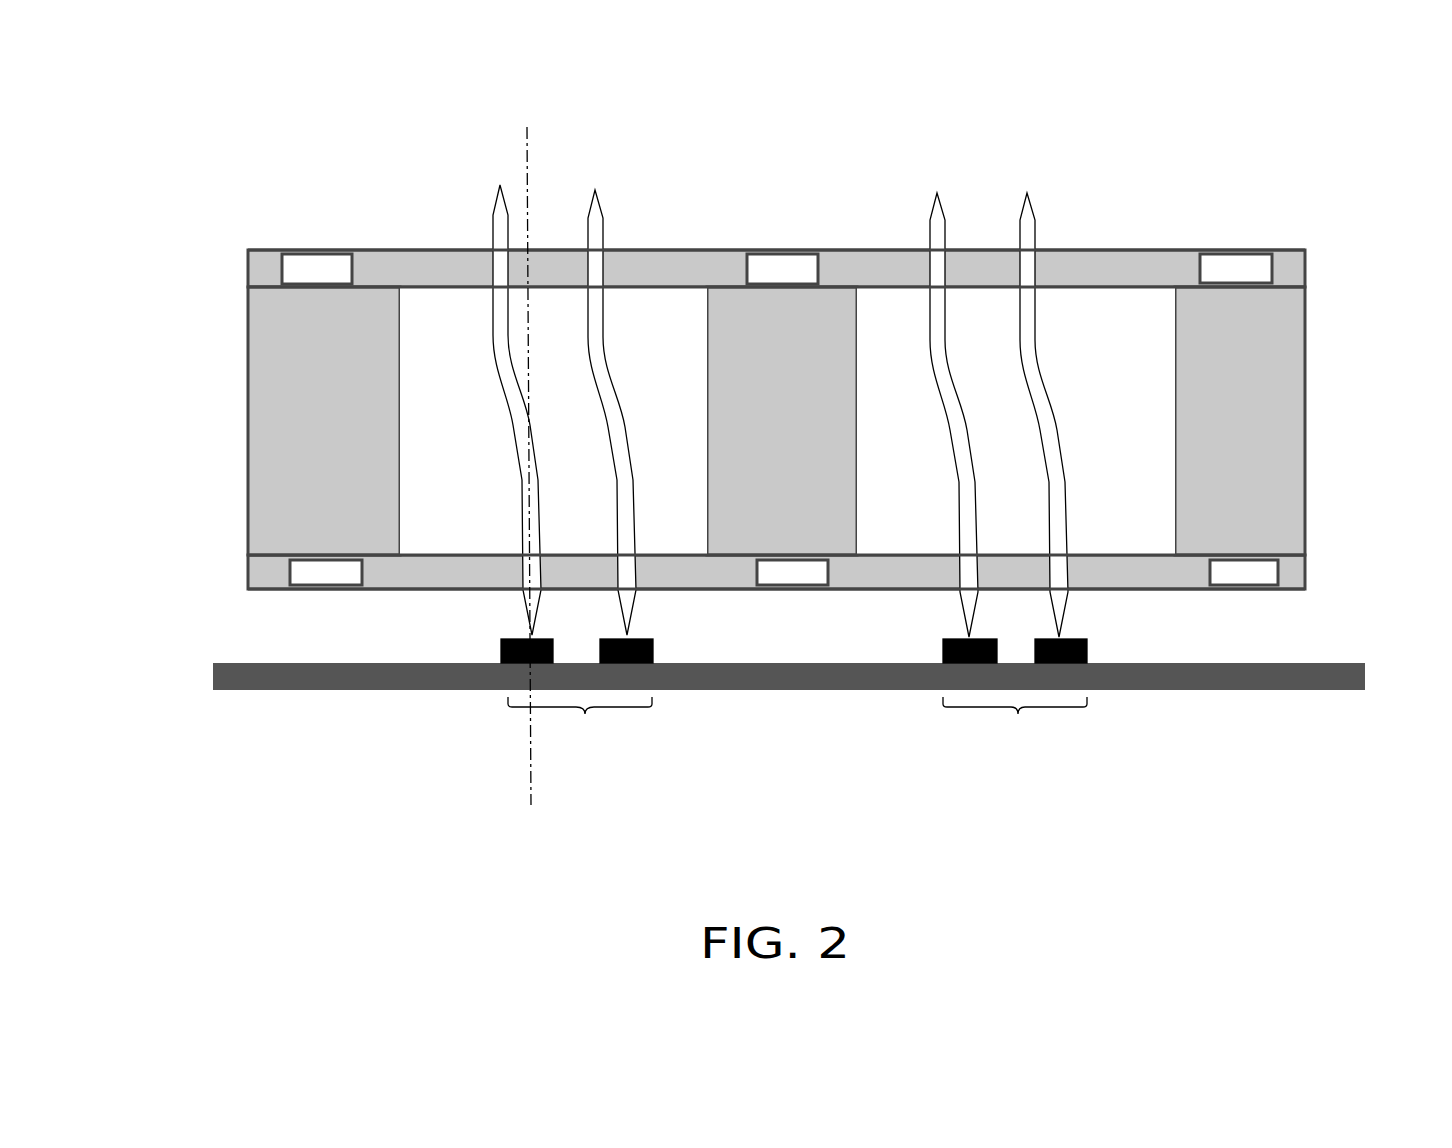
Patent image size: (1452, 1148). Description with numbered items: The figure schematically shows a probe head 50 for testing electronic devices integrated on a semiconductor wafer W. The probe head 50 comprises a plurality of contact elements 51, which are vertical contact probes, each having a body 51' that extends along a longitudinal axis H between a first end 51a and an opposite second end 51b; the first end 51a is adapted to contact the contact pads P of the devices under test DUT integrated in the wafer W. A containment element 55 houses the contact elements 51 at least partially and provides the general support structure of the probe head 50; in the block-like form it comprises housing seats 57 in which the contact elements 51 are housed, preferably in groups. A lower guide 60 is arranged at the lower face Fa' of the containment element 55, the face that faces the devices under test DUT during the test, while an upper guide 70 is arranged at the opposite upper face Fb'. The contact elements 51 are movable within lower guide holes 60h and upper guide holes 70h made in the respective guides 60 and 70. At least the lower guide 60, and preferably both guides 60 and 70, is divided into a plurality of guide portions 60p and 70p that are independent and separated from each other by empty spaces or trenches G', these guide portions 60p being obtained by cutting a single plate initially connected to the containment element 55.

The probe head 50 is at (270, 140).
The upper guide 70 is at (1305, 272).
The lower guide 60 is at (1305, 580).
The containment element 55 is at (272, 435).
The housing seats 57 is at (678, 358).
The guide portions 70p is at (272, 269).
The guide portions 60p is at (262, 573).
The upper guide holes 70h is at (937, 268).
The lower guide holes 60h is at (968, 568).
The contact elements 51 is at (748, 411).
The first end 51a is at (523, 612).
The second end 51b is at (498, 218).
The body 51' is at (482, 396).
The empty spaces G' is at (791, 470).
The upper face Fb' is at (1192, 241).
The lower face Fa' is at (1189, 601).
The semiconductor wafer W is at (237, 679).
The contact pads P is at (503, 665).
The longitudinal axis H is at (542, 471).
The devices under test DUT is at (797, 724).